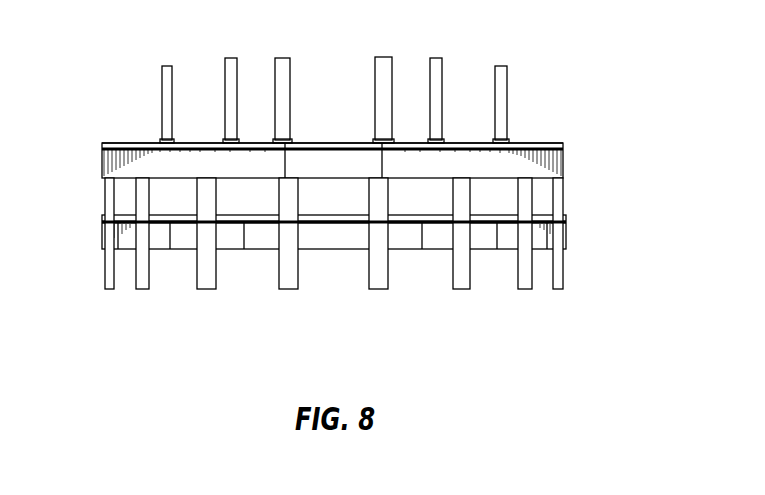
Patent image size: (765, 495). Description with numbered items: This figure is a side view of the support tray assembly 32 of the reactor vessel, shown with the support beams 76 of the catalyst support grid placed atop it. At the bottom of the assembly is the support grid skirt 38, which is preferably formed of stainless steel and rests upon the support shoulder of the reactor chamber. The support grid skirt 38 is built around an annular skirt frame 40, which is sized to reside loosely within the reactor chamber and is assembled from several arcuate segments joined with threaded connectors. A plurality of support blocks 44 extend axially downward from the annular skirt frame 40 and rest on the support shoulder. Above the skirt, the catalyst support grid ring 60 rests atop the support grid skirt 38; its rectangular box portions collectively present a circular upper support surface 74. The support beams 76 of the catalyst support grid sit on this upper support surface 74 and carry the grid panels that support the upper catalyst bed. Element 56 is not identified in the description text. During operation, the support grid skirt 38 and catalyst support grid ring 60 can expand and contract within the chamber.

The support tray assembly 32 is at (572, 124).
The support grid skirt 38 is at (94, 232).
The annular skirt frame 40 is at (553, 233).
The support blocks 44 is at (197, 277).
The leg side 56 is at (217, 205).
The catalyst support grid ring 60 is at (572, 161).
The circular upper support surface 74 is at (212, 143).
The support beams 76 is at (162, 102).